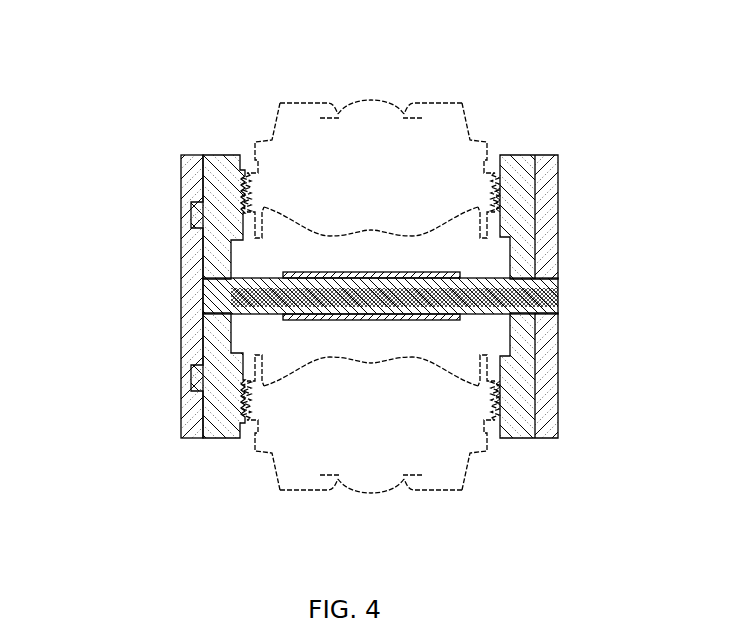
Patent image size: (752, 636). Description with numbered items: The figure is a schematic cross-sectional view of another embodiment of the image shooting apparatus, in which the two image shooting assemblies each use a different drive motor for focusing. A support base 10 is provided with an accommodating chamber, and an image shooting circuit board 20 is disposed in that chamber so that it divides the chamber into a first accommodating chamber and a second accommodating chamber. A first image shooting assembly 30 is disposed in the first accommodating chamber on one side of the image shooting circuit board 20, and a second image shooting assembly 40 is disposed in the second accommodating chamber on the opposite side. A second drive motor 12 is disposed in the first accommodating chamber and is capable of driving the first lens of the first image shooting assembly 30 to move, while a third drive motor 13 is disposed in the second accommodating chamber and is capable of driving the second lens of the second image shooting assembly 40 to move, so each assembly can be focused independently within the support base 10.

The support base 10 is at (182, 218).
The second drive motor 12 is at (223, 155).
The third drive motor 13 is at (220, 438).
The image shooting circuit board 20 is at (493, 278).
The first image shooting assembly 30 is at (465, 107).
The second image shooting assembly 40 is at (462, 480).